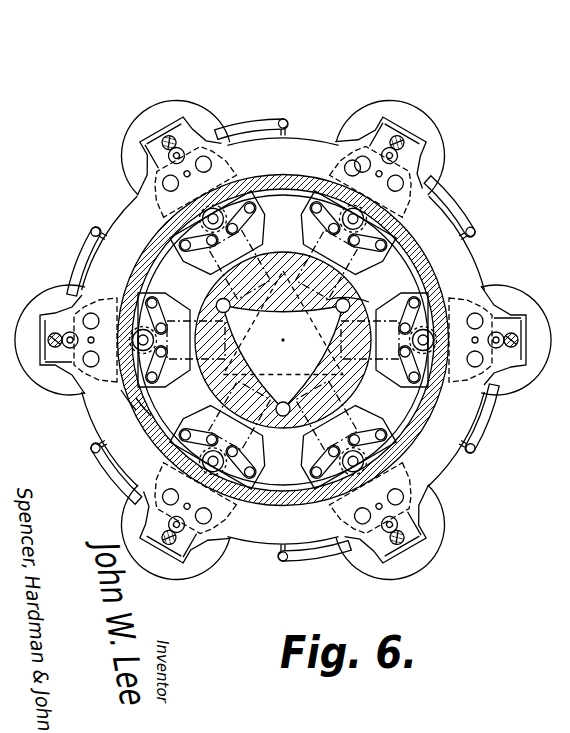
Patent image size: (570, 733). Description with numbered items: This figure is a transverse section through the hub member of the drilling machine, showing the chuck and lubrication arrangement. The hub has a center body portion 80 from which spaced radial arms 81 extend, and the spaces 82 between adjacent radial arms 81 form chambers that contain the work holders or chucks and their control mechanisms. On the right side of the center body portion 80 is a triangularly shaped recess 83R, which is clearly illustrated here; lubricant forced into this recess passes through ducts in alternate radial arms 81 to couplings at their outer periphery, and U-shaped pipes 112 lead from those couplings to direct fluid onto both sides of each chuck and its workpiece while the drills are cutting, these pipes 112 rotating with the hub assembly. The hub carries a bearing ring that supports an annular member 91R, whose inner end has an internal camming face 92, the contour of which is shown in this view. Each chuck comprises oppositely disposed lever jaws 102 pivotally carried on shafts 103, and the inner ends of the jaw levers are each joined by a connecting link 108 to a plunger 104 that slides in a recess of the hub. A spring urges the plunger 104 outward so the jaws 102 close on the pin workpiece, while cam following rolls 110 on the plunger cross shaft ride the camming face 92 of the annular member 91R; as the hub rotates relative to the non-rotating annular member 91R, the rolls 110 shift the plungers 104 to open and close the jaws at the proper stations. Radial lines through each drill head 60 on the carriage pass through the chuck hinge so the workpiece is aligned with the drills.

The drill head 60 is at (424, 125).
The center body portion 80 is at (293, 264).
The radial arms 81 is at (279, 190).
The spaces 82 is at (402, 242).
The triangularly shaped recess 83R is at (361, 305).
The annular member 91R is at (129, 397).
The internal camming face 92 is at (147, 411).
The lever jaws 102 is at (380, 134).
The shafts 103 is at (346, 165).
The plunger 104 is at (374, 259).
The connecting link 108 is at (304, 225).
The cam following rolls 110 is at (369, 222).
The U-shaped pipes 112 is at (269, 124).